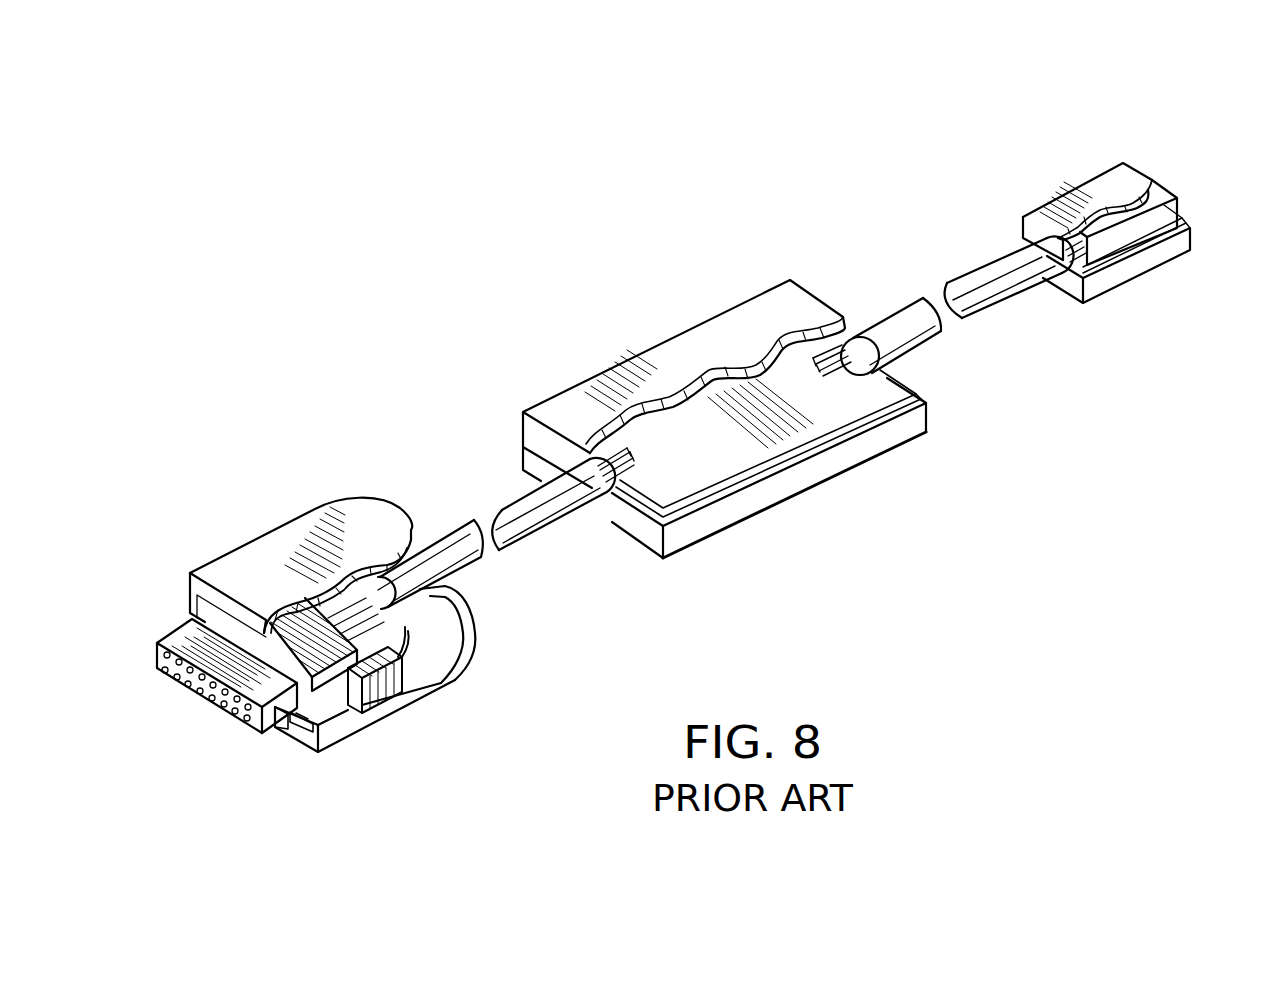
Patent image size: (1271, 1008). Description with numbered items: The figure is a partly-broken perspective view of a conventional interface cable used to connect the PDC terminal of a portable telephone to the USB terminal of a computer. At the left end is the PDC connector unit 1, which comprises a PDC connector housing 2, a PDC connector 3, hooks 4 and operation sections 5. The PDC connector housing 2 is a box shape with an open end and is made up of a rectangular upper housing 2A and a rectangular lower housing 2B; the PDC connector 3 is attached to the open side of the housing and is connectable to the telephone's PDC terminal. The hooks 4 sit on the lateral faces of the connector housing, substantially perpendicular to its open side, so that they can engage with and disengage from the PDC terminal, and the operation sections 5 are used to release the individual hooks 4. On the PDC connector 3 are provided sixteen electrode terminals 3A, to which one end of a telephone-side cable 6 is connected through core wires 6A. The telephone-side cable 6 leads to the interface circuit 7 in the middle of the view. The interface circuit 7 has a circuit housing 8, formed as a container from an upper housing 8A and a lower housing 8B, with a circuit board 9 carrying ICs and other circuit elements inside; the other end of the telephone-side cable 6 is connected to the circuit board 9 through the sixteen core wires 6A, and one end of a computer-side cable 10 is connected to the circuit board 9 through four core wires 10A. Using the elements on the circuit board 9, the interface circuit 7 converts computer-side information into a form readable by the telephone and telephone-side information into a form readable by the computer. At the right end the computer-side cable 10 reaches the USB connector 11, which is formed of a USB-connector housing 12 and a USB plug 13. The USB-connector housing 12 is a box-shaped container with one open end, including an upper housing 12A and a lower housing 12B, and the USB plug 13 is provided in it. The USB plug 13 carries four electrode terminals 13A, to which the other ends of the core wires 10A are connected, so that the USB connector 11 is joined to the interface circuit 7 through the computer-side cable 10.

The PDC connector unit 1 is at (236, 540).
The PDC connector housing 2 is at (475, 637).
The upper housing 2A is at (326, 528).
The lower housing 2B is at (443, 670).
The PDC connector 3 is at (190, 634).
The electrode terminals 3A is at (181, 684).
The hooks 4 is at (322, 698).
The operation sections 5 is at (386, 690).
The telephone-side cable 6 is at (518, 536).
The core wires 6A is at (352, 582).
The interface circuit 7 is at (650, 346).
The circuit housing 8 is at (782, 297).
The upper housing 8A is at (567, 413).
The lower housing 8B is at (798, 477).
The circuit board 9 is at (828, 410).
The computer-side cable 10 is at (967, 282).
The core wires 10A is at (844, 340).
The USB connector 11 is at (1101, 163).
The USB-connector housing 12 is at (1042, 211).
The upper housing 12A is at (1132, 176).
The lower housing 12B is at (1169, 262).
The USB plug 13 is at (1180, 214).
The electrode terminals 13A is at (1178, 187).